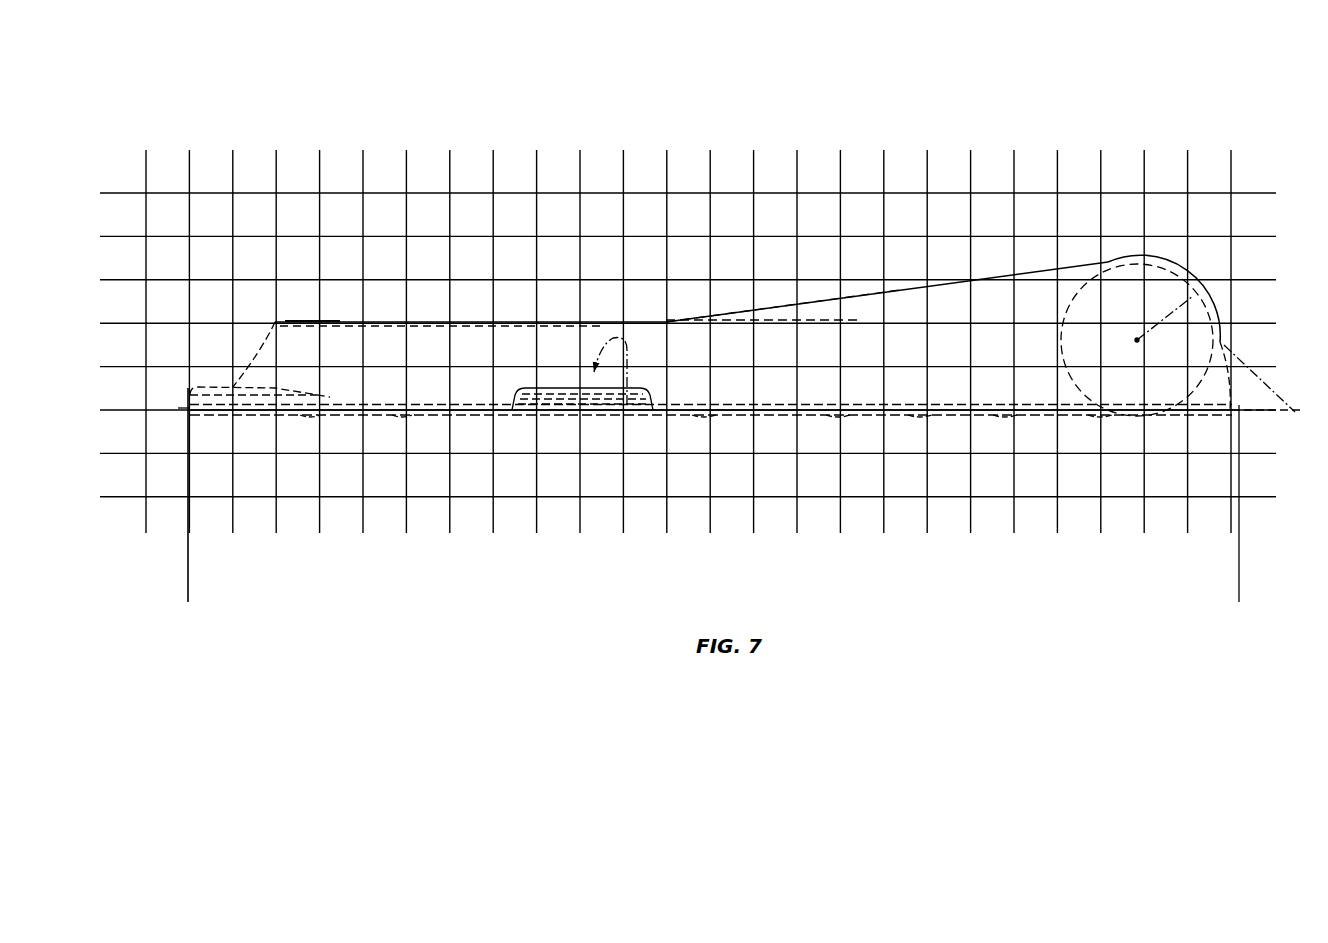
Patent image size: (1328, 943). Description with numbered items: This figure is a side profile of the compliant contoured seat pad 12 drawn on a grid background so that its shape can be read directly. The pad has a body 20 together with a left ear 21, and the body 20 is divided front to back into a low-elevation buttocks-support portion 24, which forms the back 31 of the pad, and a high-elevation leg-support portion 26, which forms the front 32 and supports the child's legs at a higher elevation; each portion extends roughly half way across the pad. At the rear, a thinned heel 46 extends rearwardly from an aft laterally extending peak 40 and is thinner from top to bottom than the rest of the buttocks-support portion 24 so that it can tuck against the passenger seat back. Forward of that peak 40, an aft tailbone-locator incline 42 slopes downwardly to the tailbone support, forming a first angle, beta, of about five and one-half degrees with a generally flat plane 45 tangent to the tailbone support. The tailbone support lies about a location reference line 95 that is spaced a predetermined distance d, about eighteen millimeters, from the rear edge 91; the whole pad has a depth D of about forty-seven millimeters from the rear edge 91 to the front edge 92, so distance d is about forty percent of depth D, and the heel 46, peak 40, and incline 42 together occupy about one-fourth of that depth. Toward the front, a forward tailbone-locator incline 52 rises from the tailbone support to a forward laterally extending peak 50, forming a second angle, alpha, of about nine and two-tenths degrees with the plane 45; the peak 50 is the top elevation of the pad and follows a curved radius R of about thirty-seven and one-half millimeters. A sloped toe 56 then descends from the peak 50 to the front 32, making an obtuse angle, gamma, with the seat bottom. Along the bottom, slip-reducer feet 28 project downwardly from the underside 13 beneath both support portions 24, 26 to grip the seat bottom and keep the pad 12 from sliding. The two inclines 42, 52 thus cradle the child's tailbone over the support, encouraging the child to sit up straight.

The compliant contoured seat pad 12 is at (1066, 118).
The underside 13 is at (480, 418).
The body 20 is at (646, 286).
The left ear 21 is at (622, 406).
The low-elevation buttocks-support portion 24 is at (467, 296).
The high-elevation leg-support portion 26 is at (997, 258).
The slip-reducer feet 28 is at (312, 418).
The back 31 is at (186, 402).
The front 32 is at (1236, 345).
The aft laterally extending peak 40 is at (262, 311).
The aft tailbone-locator incline 42 is at (321, 308).
The generally flat plane 45 is at (855, 324).
The thinned heel 46 is at (212, 375).
The forward laterally extending peak 50 is at (1113, 252).
The forward tailbone-locator incline 52 is at (914, 285).
The sloped toe 56 is at (1230, 327).
The rear edge 91 is at (187, 408).
The front edge 92 is at (1248, 411).
The location reference line 95 is at (577, 412).
The radius R is at (1186, 302).
The predetermined distance d is at (576, 518).
The depth D is at (1237, 579).